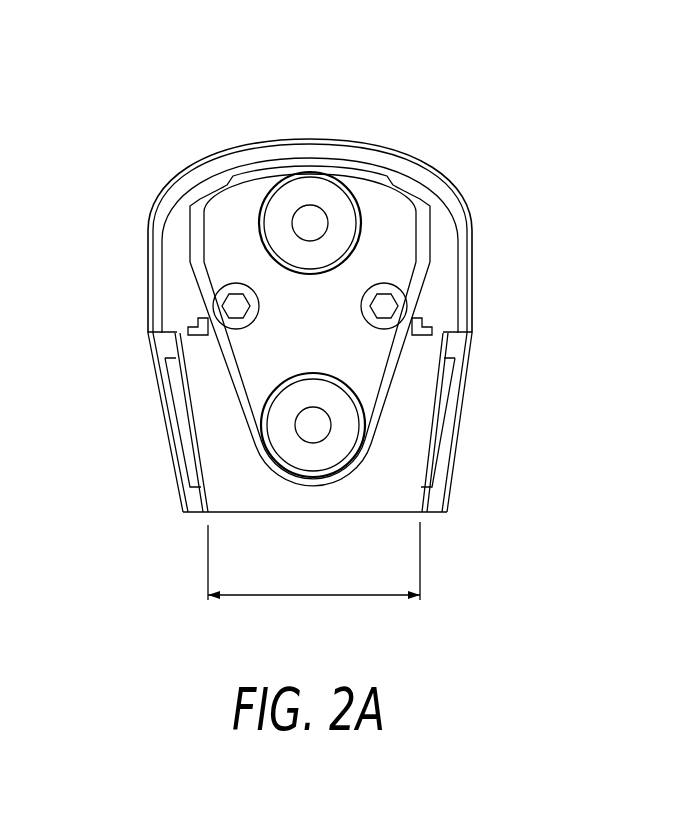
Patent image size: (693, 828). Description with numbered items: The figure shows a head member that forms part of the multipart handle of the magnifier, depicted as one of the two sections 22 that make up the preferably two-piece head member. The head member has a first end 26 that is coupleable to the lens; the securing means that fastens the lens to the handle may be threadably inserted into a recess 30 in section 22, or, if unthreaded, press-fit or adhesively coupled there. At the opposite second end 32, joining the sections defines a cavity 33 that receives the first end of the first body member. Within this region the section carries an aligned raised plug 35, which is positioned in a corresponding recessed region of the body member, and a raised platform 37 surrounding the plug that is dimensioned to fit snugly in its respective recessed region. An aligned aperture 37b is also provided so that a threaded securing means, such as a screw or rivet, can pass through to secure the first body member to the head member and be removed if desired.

The section 22 is at (190, 167).
The first end 26 is at (472, 202).
The recess 30 is at (310, 222).
The second end 32 is at (368, 512).
The cavity 33 is at (247, 485).
The raised plug 35 is at (340, 404).
The raised platform 37 is at (368, 448).
The aperture 37b is at (316, 428).